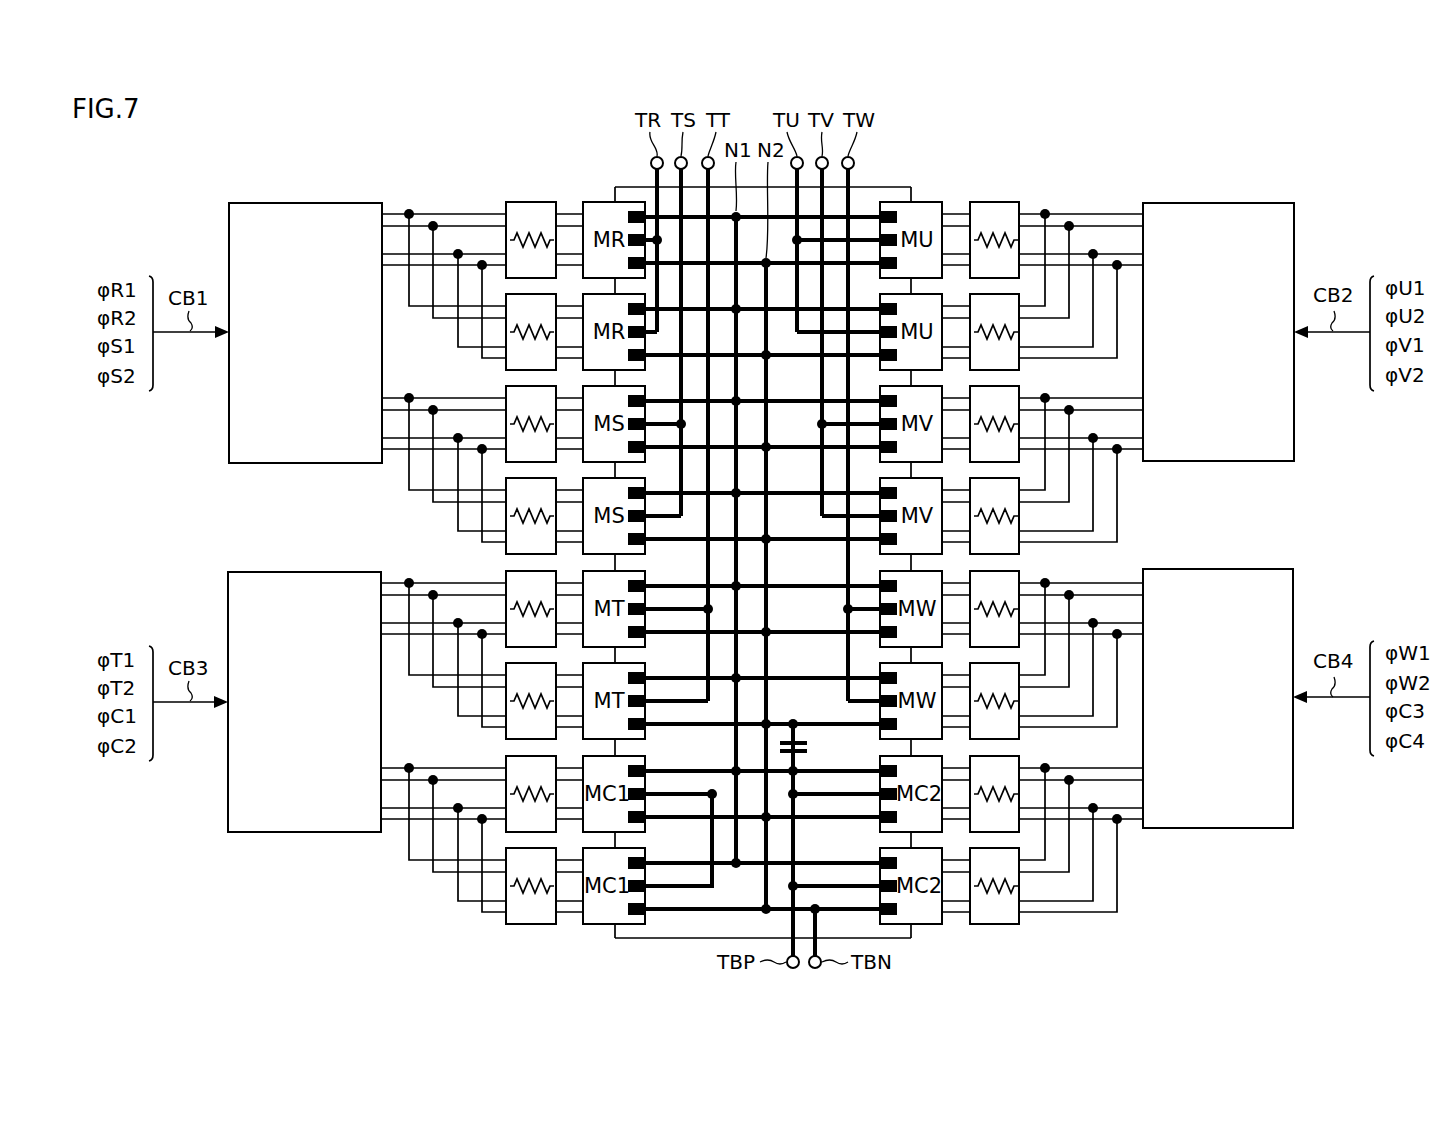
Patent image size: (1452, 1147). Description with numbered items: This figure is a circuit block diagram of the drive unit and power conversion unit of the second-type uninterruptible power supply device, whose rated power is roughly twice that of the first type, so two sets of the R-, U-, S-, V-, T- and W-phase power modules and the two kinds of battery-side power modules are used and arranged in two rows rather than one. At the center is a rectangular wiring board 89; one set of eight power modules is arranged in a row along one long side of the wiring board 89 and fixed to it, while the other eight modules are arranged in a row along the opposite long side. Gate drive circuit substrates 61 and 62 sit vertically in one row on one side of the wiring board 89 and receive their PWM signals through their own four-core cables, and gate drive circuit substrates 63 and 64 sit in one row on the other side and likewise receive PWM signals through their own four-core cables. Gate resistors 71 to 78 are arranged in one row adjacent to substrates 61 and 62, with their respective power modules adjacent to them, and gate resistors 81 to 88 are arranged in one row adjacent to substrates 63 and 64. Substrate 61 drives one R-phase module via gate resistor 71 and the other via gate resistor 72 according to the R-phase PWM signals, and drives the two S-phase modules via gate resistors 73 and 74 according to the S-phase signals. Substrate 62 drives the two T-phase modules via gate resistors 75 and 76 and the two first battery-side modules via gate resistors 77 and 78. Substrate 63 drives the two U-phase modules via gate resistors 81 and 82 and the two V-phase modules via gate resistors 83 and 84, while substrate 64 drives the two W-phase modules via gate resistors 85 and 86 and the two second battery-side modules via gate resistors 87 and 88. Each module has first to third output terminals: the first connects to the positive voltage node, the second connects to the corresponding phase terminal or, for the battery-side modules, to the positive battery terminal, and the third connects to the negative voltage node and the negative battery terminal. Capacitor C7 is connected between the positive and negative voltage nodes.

The gate drive circuit substrate 61 is at (229, 432).
The gate drive circuit substrate 62 is at (228, 802).
The gate drive circuit substrate 63 is at (1294, 428).
The gate drive circuit substrate 64 is at (1294, 796).
The gate resistor 71 is at (528, 202).
The gate resistor 72 is at (505, 368).
The gate resistor 73 is at (505, 390).
The gate resistor 74 is at (505, 553).
The gate resistor 75 is at (505, 576).
The gate resistor 76 is at (505, 738).
The gate resistor 77 is at (505, 760).
The gate resistor 78 is at (528, 925).
The gate resistor 81 is at (995, 202).
The gate resistor 82 is at (1020, 331).
The gate resistor 83 is at (1020, 388).
The gate resistor 84 is at (1020, 516).
The gate resistor 85 is at (1020, 573).
The gate resistor 86 is at (1020, 701).
The gate resistor 87 is at (1020, 758).
The gate resistor 88 is at (997, 925).
The wiring board 89 is at (690, 940).
The capacitor C7 is at (810, 748).